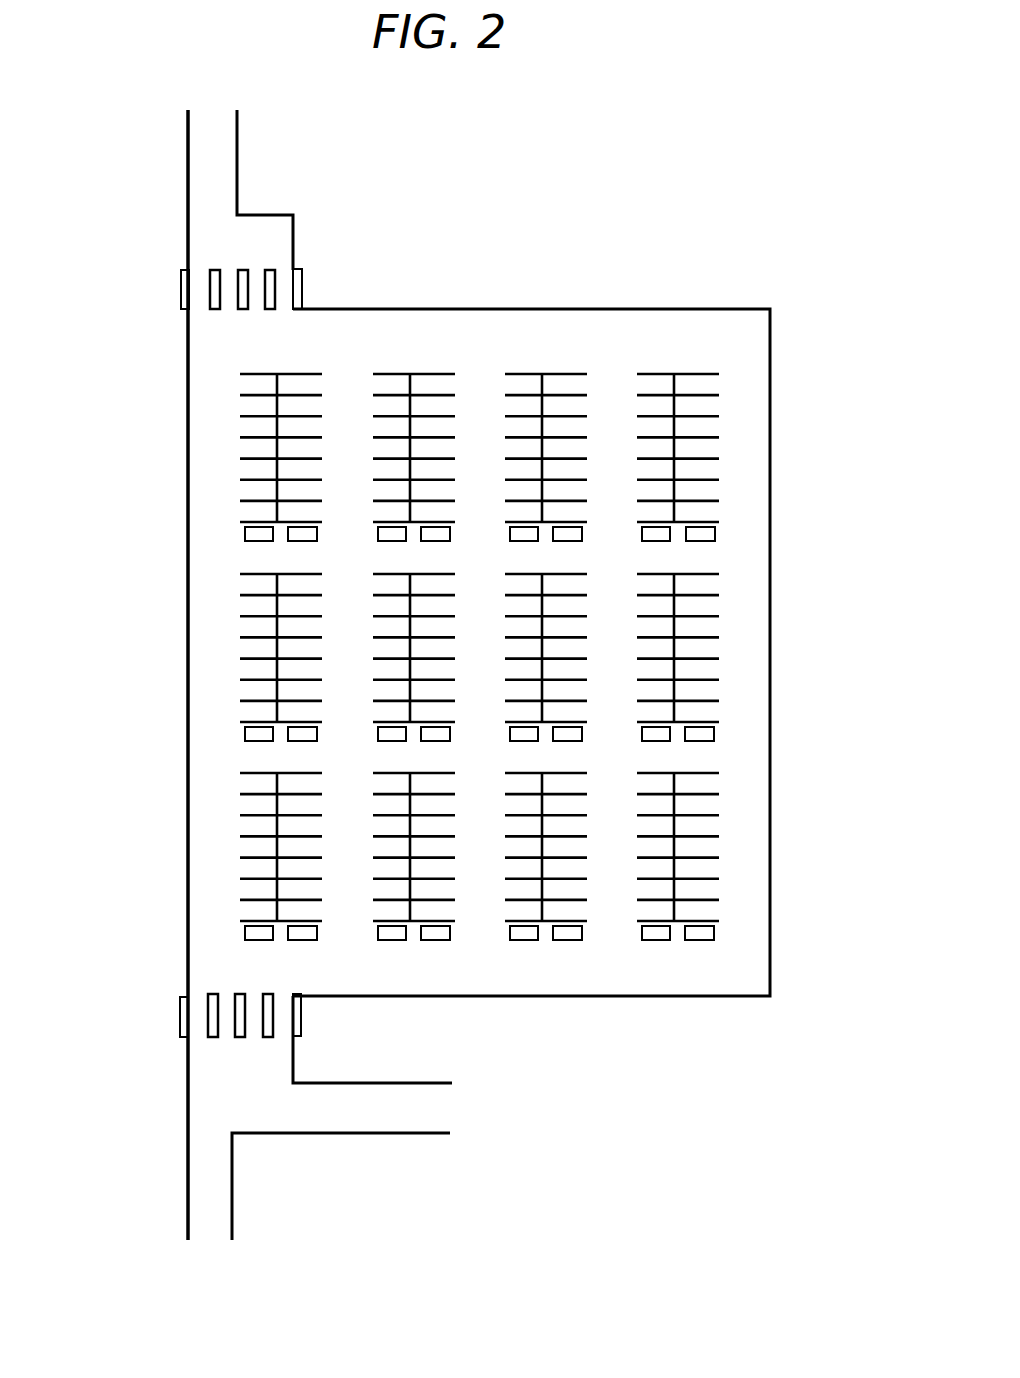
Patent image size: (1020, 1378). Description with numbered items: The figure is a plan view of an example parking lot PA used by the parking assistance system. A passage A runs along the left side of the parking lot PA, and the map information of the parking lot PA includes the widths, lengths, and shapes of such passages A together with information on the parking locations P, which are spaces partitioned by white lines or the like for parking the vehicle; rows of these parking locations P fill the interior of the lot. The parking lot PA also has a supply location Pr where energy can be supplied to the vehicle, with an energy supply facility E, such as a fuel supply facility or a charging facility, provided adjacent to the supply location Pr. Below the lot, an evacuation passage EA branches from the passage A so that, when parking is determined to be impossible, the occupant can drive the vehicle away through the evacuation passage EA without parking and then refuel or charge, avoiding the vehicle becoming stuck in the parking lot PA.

The parking lot PA is at (711, 158).
The passage A is at (200, 652).
The parking location P is at (698, 382).
The supply location Pr is at (705, 512).
The energy supply facility E is at (715, 533).
The evacuation passage EA is at (327, 1117).